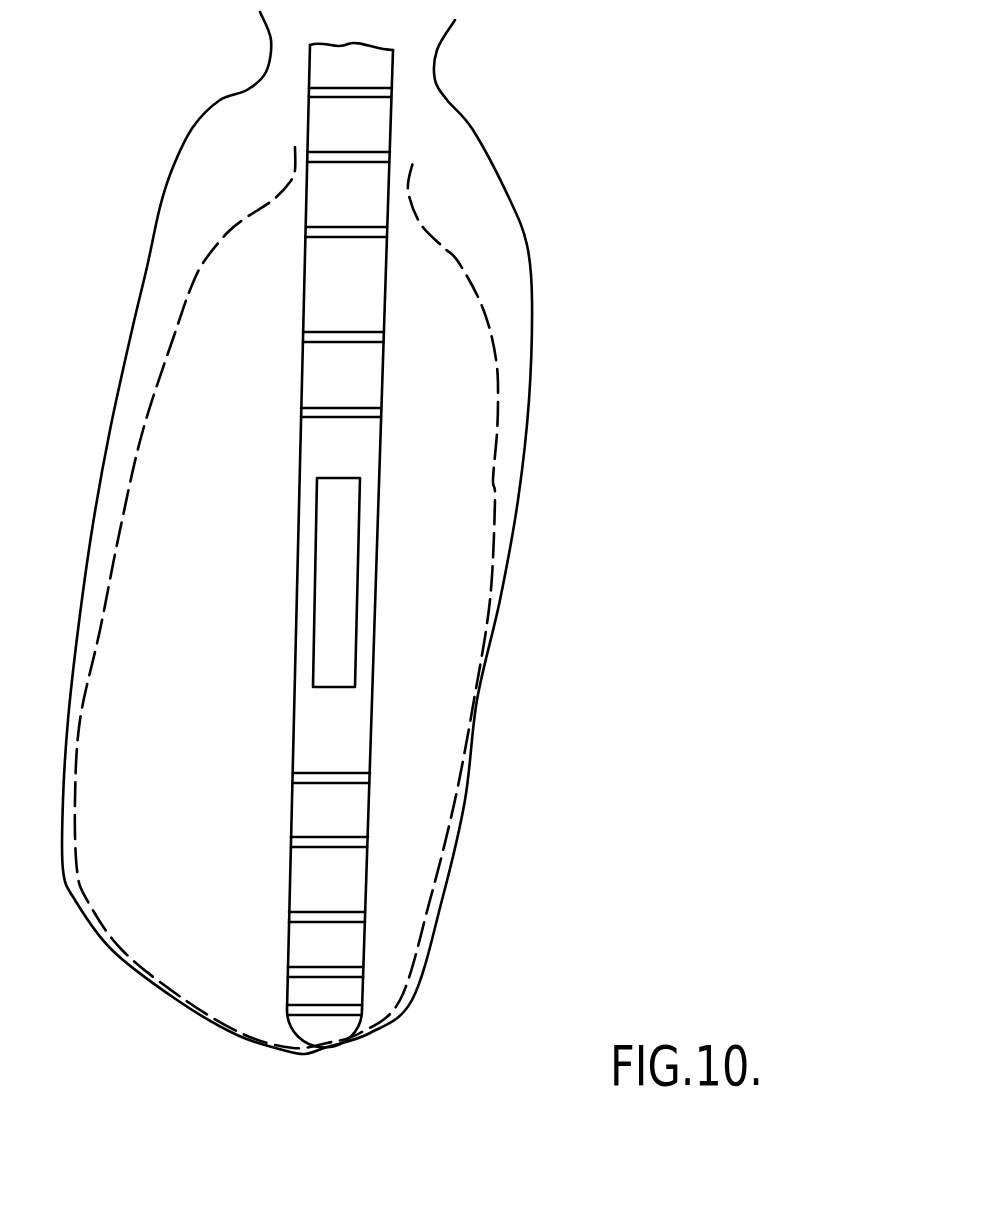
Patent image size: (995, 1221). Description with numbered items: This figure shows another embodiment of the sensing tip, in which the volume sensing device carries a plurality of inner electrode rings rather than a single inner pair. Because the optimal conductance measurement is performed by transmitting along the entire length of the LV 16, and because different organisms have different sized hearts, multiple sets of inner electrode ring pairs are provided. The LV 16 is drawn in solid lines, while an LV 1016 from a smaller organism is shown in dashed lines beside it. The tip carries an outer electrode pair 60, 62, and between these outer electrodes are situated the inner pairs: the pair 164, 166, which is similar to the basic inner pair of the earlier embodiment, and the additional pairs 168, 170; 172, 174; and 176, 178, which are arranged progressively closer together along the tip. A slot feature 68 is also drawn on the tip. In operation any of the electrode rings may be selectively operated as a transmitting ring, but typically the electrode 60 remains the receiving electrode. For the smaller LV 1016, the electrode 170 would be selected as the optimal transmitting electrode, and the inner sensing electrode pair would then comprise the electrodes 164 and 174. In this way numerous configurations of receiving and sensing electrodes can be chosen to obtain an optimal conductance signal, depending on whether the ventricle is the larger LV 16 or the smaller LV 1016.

The LV 16 is at (247, 176).
The LV 1016 is at (220, 638).
The electrode 60 is at (367, 1012).
The electrode 62 is at (393, 95).
The electrode ring 166 is at (388, 160).
The electrode 170 is at (386, 232).
The electrode 174 is at (384, 342).
The electrode ring 178 is at (383, 418).
The slot opening 68 is at (360, 540).
The electrode ring 176 is at (372, 783).
The electrode ring 172 is at (371, 847).
The electrode ring 168 is at (368, 920).
The electrode 164 is at (365, 975).